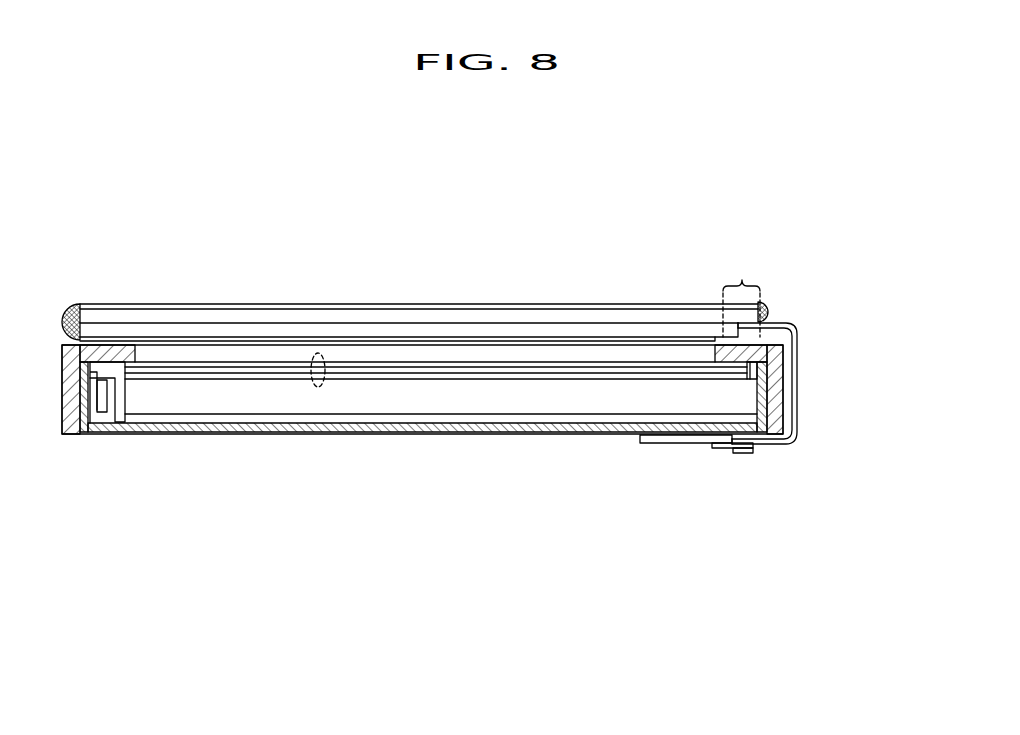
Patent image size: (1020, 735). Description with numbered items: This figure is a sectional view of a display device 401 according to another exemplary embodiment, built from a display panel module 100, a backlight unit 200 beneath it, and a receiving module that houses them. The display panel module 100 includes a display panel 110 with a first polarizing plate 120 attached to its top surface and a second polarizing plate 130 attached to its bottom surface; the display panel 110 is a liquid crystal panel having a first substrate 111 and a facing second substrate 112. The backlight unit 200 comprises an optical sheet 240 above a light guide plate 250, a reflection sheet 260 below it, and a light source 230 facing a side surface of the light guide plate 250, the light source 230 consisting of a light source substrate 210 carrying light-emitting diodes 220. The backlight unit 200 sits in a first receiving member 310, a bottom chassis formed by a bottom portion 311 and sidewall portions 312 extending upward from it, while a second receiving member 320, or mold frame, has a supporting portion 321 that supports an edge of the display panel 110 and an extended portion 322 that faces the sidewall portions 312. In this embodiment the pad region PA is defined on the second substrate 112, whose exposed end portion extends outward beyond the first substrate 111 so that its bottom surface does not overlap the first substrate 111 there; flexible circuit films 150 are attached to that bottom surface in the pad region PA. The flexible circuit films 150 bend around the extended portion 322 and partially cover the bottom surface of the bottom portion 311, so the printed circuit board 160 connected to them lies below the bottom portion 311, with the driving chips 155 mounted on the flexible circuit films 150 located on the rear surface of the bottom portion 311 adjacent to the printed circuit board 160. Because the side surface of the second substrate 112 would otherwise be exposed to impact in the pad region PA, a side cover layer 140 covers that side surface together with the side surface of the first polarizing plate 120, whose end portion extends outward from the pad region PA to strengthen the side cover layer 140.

The display device 401 is at (703, 198).
The display panel module 100 is at (483, 187).
The display panel 110 is at (425, 233).
The first substrate 111 is at (338, 327).
The second substrate 112 is at (400, 313).
The first polarizing plate 120 is at (452, 305).
The second polarizing plate 130 is at (288, 341).
The side cover layer 140 is at (67, 316).
The flexible circuit films 150 is at (793, 330).
The driving chips 155 is at (745, 452).
The printed circuit board 160 is at (648, 438).
The backlight unit 200 is at (338, 552).
The light source substrate 210 is at (92, 420).
The light-emitting diodes 220 is at (105, 396).
The light source 230 is at (133, 507).
The optical sheet 240 is at (316, 388).
The light guide plate 250 is at (253, 407).
The reflection sheet 260 is at (197, 420).
The first receiving member 310 is at (750, 507).
The bottom portion 311 is at (670, 433).
The sidewall portions 312 is at (755, 398).
The second receiving member 320 is at (888, 355).
The supporting portion 321 is at (742, 352).
The extended portion 322 is at (775, 402).
The pad region PA is at (741, 295).